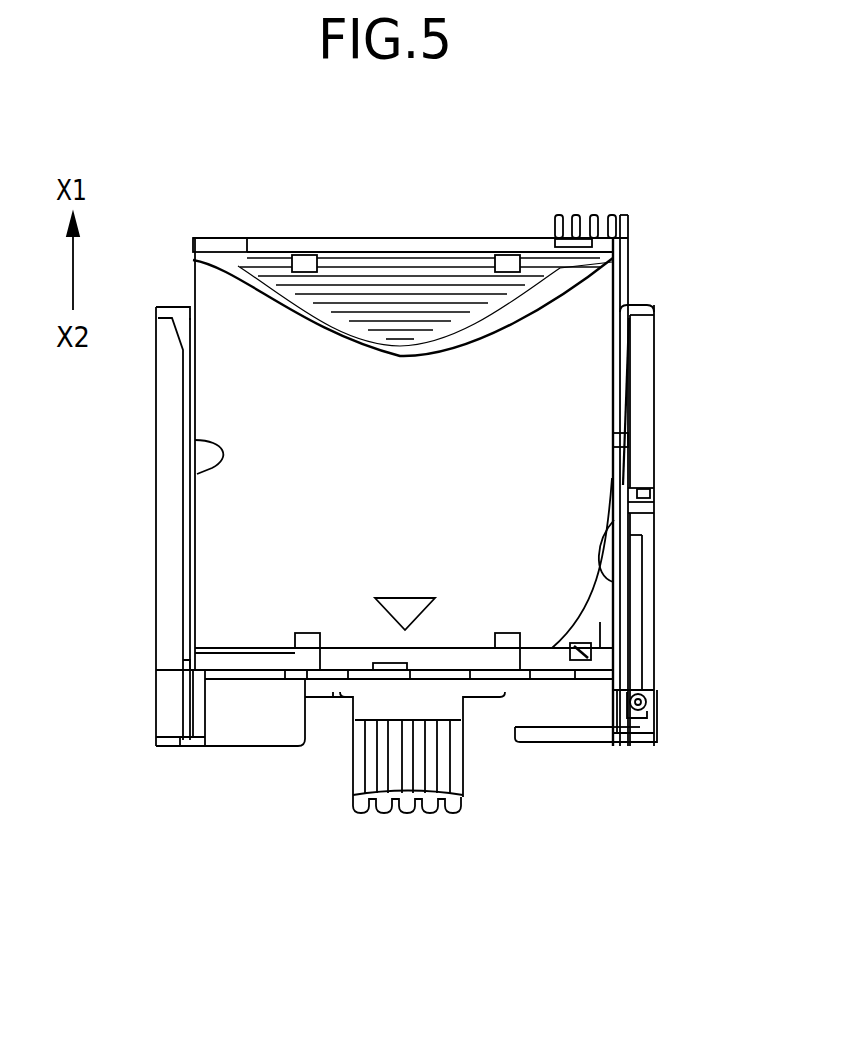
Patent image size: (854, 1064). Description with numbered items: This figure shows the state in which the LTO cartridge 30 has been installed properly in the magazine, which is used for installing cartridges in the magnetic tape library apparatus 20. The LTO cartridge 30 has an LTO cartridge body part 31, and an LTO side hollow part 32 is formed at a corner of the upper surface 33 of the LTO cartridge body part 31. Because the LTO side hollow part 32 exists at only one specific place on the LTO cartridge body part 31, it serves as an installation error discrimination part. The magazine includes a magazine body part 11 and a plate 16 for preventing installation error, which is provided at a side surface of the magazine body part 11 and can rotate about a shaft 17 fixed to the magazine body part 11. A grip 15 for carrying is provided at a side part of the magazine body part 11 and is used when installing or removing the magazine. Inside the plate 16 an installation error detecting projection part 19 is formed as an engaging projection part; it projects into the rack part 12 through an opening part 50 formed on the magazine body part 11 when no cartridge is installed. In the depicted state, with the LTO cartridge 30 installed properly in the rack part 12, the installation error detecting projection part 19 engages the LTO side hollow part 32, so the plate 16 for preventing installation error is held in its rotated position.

The LTO cartridge 30 is at (565, 342).
The magazine body part 11 is at (655, 425).
The rack part 12 is at (195, 440).
The upper surface 33 is at (243, 508).
The LTO cartridge body part 31 is at (232, 623).
The grip for carrying 15 is at (412, 792).
The opening part 50 is at (645, 518).
The installation error detecting projection part 19 is at (607, 555).
The plate for preventing installation error 16 is at (655, 657).
The shaft 17 is at (648, 702).
The magnetic tape library apparatus 20 is at (643, 745).
The LTO side hollow part 32 is at (590, 620).